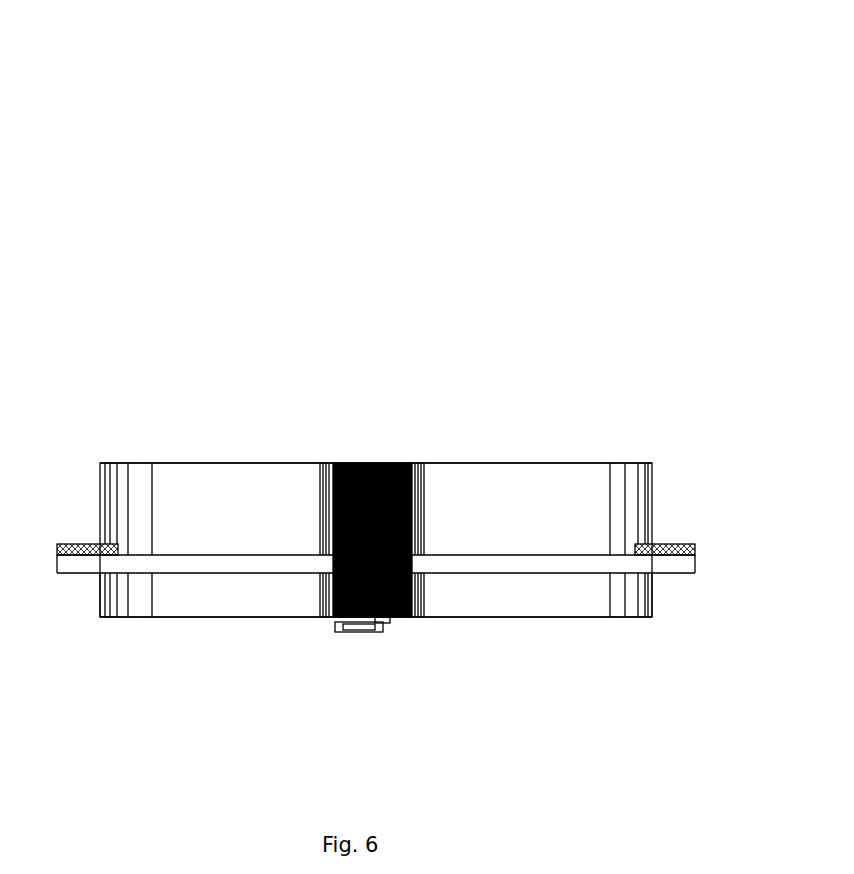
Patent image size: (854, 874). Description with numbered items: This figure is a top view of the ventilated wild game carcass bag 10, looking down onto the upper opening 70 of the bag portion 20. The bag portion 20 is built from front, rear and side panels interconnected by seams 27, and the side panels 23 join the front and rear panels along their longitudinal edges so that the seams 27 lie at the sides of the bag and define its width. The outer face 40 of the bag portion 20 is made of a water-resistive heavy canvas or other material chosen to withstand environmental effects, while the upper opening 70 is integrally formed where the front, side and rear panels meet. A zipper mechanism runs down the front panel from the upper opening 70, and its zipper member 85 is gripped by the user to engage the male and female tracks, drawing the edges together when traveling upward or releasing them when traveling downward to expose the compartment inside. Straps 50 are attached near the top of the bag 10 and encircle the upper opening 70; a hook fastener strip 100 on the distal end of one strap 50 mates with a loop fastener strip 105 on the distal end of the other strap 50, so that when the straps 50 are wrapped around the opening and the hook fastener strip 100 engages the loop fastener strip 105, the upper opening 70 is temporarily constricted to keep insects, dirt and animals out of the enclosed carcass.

The ventilated wild game carcass bag 10 is at (556, 140).
The bag portion 20 is at (529, 452).
The side panels 23 is at (188, 495).
The seams 27 is at (253, 462).
The outer face 40 is at (524, 603).
The straps 50 is at (198, 565).
The upper opening 70 is at (392, 463).
The zipper member 85 is at (375, 628).
The hook fastener strip 100 is at (680, 545).
The loop fastener strip 105 is at (68, 543).